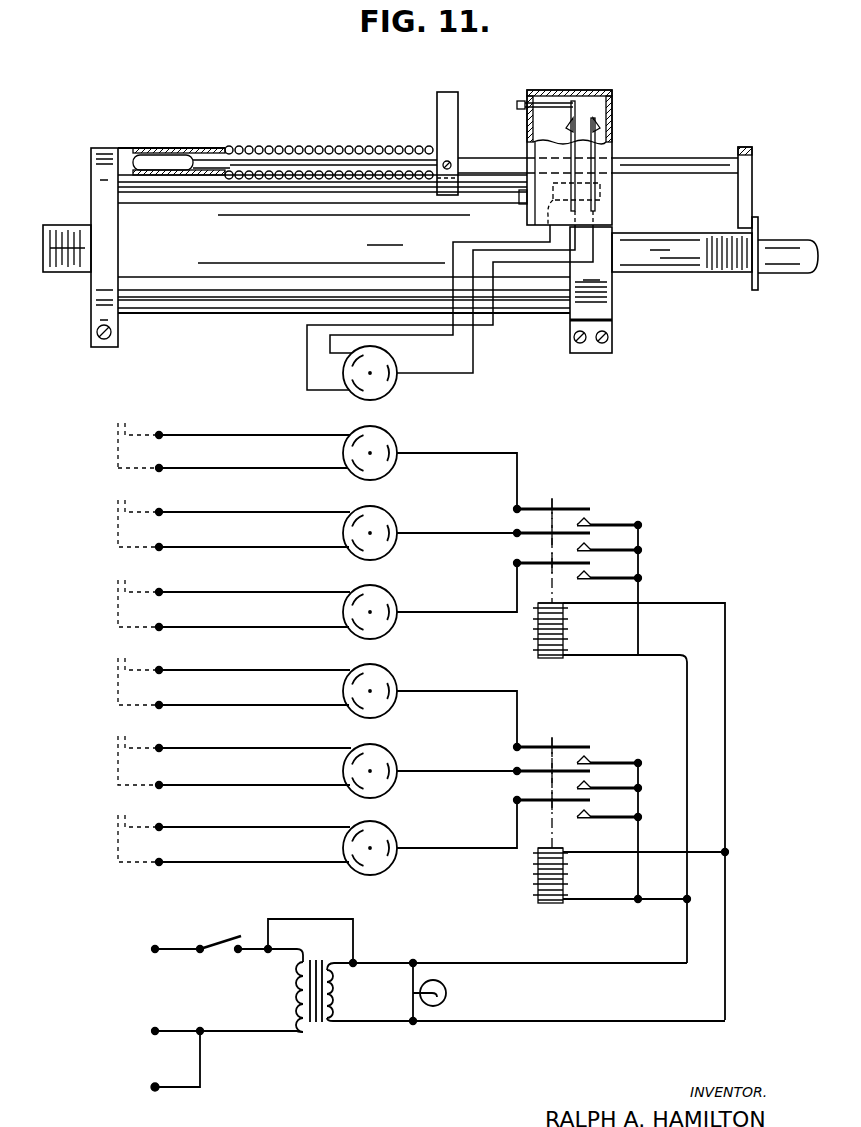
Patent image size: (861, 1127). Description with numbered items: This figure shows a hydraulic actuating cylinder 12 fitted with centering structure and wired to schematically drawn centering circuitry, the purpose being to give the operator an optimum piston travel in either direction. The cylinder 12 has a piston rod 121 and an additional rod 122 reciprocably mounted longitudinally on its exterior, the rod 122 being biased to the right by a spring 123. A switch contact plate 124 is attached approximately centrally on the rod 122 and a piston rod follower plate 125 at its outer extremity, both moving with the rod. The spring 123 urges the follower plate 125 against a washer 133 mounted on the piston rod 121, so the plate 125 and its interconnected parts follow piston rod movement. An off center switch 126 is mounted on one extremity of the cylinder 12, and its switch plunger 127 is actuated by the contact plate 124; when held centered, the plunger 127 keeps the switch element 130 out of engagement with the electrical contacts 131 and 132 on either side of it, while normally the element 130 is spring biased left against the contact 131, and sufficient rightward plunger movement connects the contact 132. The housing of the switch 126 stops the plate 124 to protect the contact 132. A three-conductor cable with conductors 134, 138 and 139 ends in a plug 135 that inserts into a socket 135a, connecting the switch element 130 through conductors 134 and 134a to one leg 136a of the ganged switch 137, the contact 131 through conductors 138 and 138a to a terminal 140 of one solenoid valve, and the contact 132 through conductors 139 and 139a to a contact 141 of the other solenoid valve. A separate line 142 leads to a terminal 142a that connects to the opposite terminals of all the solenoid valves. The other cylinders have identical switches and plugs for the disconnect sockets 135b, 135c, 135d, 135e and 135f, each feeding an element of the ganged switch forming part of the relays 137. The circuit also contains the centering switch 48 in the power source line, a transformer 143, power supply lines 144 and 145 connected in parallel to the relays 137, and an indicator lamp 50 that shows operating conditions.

The cylinder 12 is at (312, 253).
The piston rod 121 is at (645, 262).
The additional rod 122 is at (668, 158).
The spring 123 is at (285, 148).
The switch contact plate 124 is at (437, 108).
The piston rod follower plate 125 is at (752, 192).
The off center switch 126 is at (612, 110).
The switch plunger 127 is at (518, 105).
The switch element 130 is at (575, 115).
The electrical contact 131 is at (530, 137).
The electrical contact 132 is at (605, 128).
The washer 133 is at (758, 280).
The conductor 134 is at (473, 366).
The conductor 134a is at (490, 453).
The plug 135 is at (390, 361).
The socket 135a is at (397, 452).
The disconnect socket 135b is at (397, 532).
The disconnect socket 135c is at (397, 612).
The disconnect socket 135d is at (397, 691).
The disconnect socket 135e is at (397, 771).
The disconnect socket 135f is at (397, 848).
The leg of ganged switch 136a is at (560, 507).
The ganged switch relays 137 is at (645, 537).
The conductor 138 is at (330, 343).
The conductor 138a is at (214, 435).
The conductor 139 is at (307, 367).
The conductor 139a is at (270, 468).
The terminal 140 is at (159, 437).
The contact 141 is at (159, 468).
The line 142 is at (201, 1073).
The terminal 142a is at (156, 1091).
The transformer 143 is at (320, 1028).
The power supply line 144 is at (562, 1022).
The power supply line 145 is at (562, 964).
The centering switch 48 is at (220, 942).
The indicator 50 is at (447, 997).